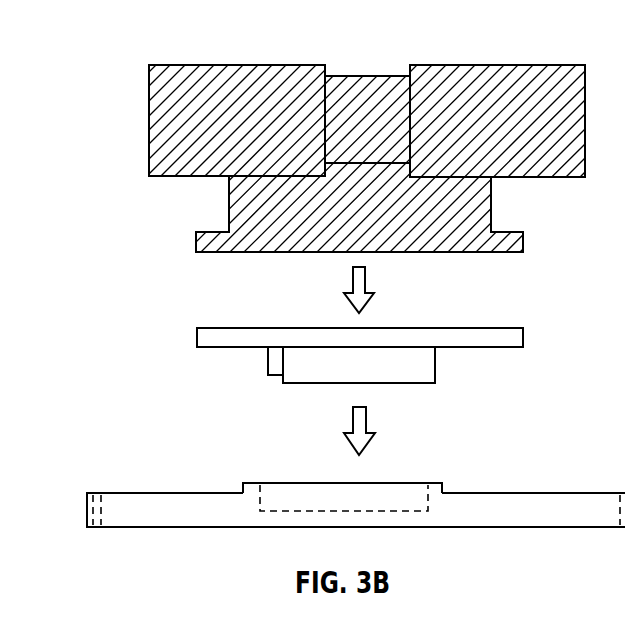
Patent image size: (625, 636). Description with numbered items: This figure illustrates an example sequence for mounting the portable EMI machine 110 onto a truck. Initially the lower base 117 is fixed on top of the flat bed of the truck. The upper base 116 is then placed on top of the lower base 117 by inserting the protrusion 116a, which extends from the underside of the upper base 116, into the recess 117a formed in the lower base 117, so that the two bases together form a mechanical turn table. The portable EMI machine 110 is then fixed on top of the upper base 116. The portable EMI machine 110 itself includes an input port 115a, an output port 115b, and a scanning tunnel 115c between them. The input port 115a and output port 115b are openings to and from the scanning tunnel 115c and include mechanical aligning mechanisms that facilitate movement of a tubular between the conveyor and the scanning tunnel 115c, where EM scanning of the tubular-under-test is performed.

The portable EMI machine 110 is at (108, 59).
The input port 115a is at (217, 88).
The output port 115b is at (492, 88).
The scanning tunnel 115c is at (373, 98).
The upper base 116 is at (256, 328).
The protrusion 116a is at (422, 360).
The lower base 117 is at (155, 493).
The recess 117a is at (423, 497).